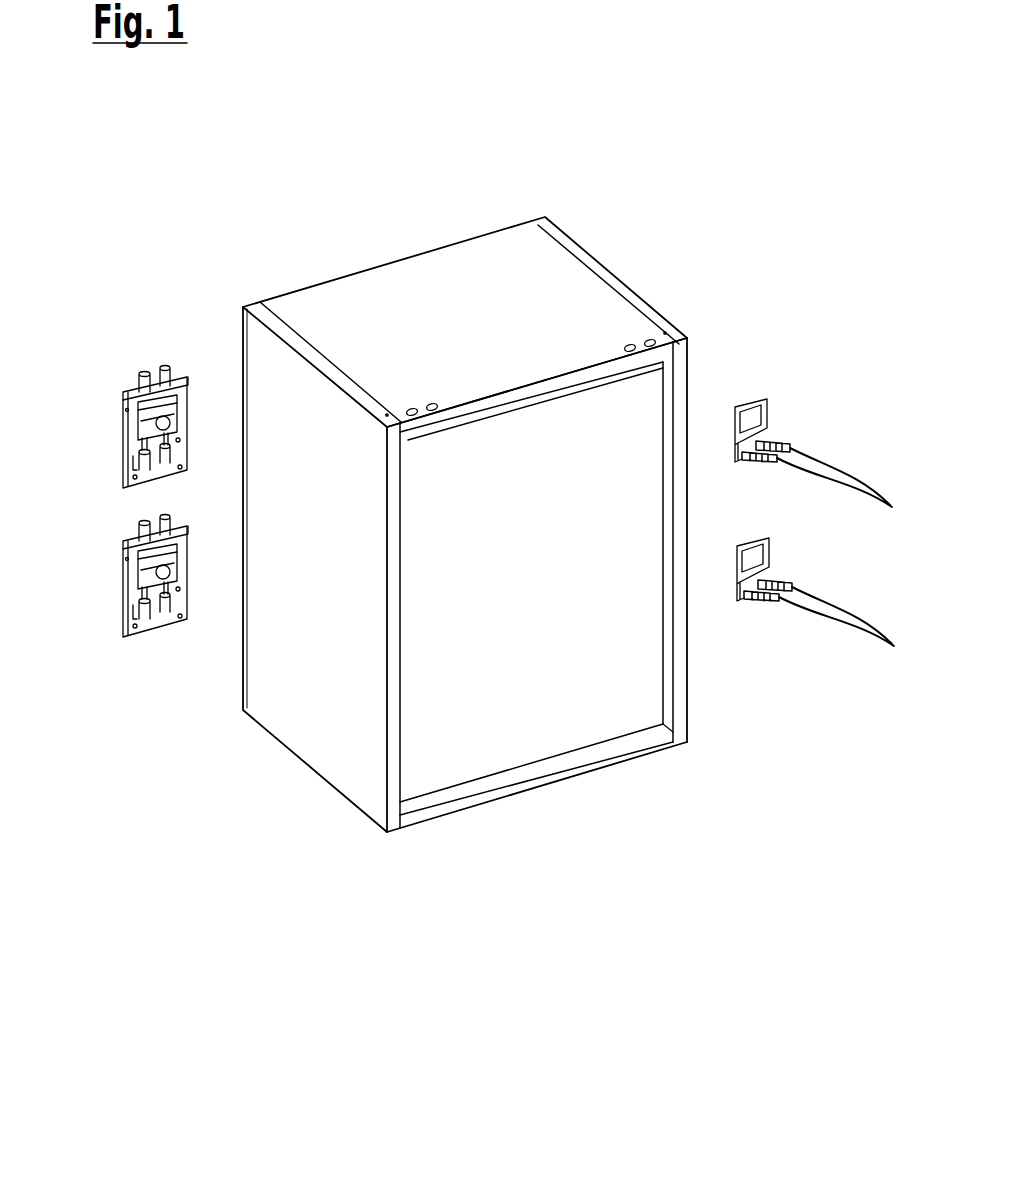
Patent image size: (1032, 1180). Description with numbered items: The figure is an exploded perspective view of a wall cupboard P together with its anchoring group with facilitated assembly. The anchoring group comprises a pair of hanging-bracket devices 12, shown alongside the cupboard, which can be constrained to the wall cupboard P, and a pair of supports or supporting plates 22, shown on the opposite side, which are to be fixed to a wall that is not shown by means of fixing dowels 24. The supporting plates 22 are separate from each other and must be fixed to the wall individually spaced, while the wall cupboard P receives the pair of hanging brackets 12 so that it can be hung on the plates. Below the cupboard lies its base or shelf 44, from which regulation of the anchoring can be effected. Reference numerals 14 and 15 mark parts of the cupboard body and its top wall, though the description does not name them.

The wall cupboard P is at (443, 248).
The hanging-bracket device 12 is at (135, 387).
The housing side wall 14 is at (335, 592).
The housing top wall 15 is at (470, 337).
The support or supporting plate 22 is at (767, 400).
The fixing dowel 24 is at (855, 569).
The base or shelf 44 is at (547, 785).